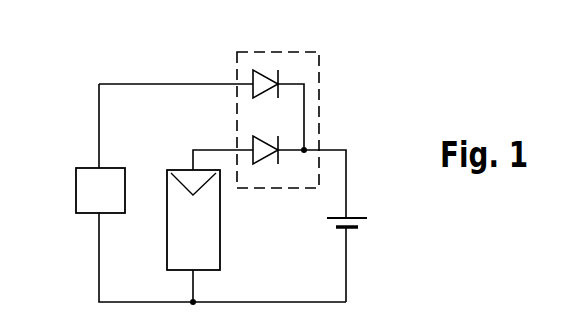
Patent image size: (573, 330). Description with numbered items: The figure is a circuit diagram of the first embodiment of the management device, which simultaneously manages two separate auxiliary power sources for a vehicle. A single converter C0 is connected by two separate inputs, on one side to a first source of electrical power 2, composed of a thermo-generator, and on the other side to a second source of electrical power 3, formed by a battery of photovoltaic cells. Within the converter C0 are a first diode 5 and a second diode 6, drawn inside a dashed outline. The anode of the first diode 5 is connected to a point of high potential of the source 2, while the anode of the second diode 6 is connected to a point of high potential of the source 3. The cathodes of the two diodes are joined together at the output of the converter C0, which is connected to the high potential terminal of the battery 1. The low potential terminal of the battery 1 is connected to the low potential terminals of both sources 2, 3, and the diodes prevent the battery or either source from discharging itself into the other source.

The battery 1 is at (352, 217).
The first source of electrical power 2 is at (82, 195).
The second source of electrical power 3 is at (212, 246).
The first diode 5 is at (258, 70).
The second diode 6 is at (263, 163).
The single converter C0 is at (319, 87).